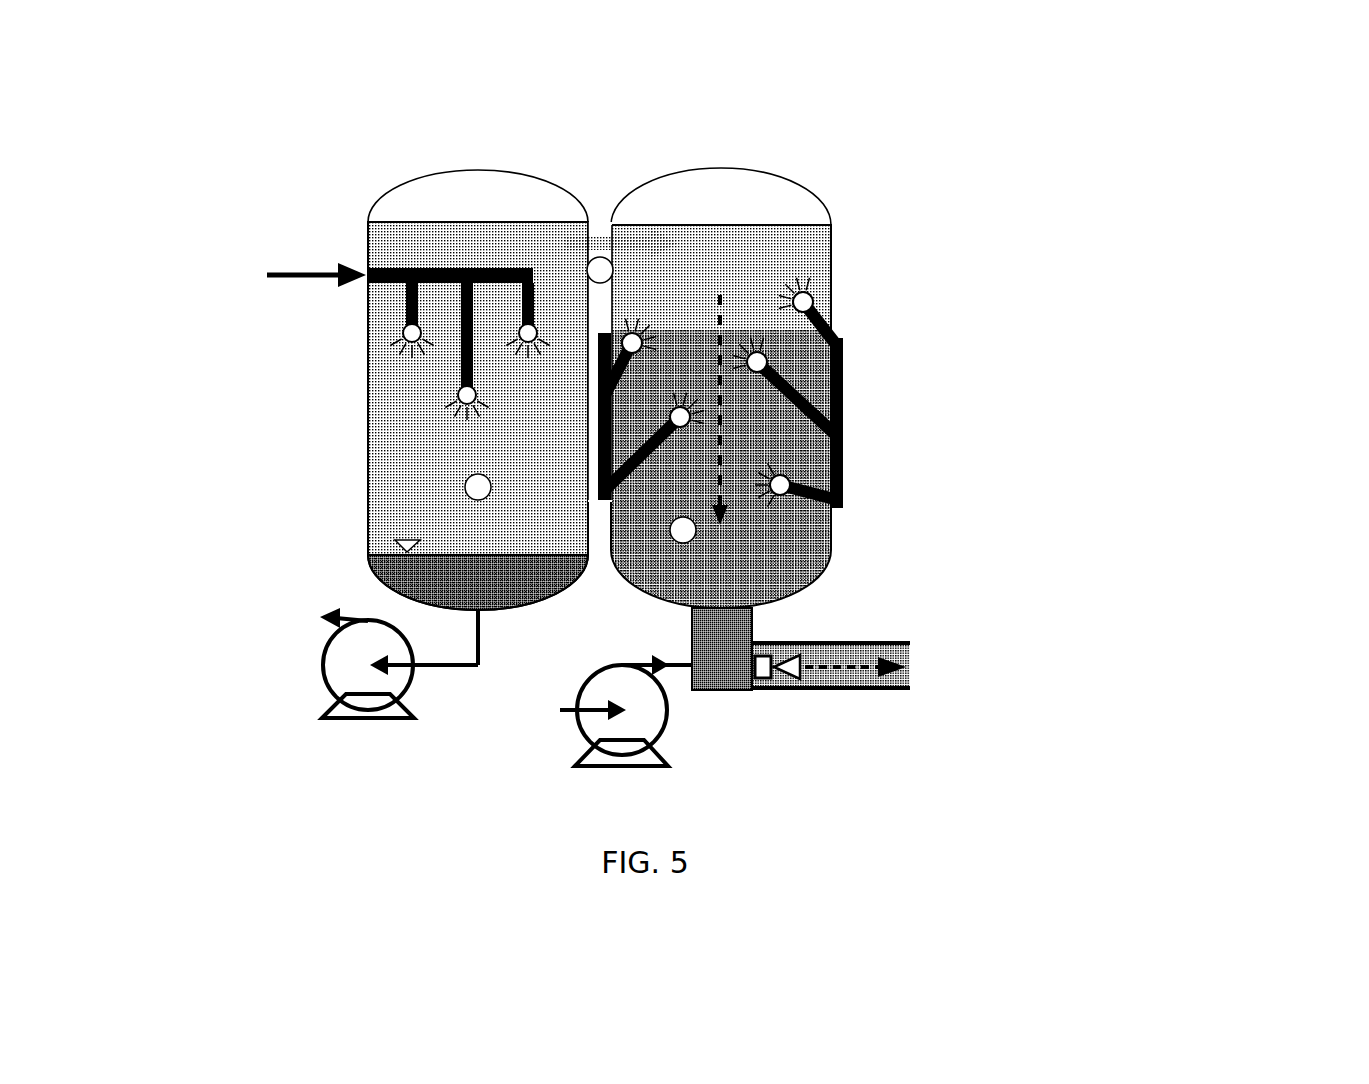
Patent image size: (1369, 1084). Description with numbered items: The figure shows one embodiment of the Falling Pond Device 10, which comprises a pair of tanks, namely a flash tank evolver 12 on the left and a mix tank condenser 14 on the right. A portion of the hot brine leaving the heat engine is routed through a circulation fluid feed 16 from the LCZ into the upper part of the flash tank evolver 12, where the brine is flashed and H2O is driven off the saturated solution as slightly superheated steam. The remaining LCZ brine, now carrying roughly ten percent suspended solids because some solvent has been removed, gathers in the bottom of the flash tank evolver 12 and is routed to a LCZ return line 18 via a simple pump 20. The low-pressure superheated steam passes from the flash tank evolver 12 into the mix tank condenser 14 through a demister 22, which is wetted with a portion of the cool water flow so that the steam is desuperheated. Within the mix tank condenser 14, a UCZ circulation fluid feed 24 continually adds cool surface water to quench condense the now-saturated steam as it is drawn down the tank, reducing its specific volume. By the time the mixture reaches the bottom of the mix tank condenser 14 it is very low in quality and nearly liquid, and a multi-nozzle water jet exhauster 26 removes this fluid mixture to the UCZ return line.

The Falling Pond Device 10 is at (705, 498).
The flash tank evolver 12 is at (332, 435).
The mix tank condenser 14 is at (868, 285).
The circulation fluid feed 16 is at (377, 290).
The LCZ return line 18 is at (438, 685).
The pump 20 is at (318, 688).
The demister 22 is at (622, 243).
The UCZ circulation fluid feed 24 is at (845, 488).
The multi-nozzle water jet exhauster 26 is at (852, 712).